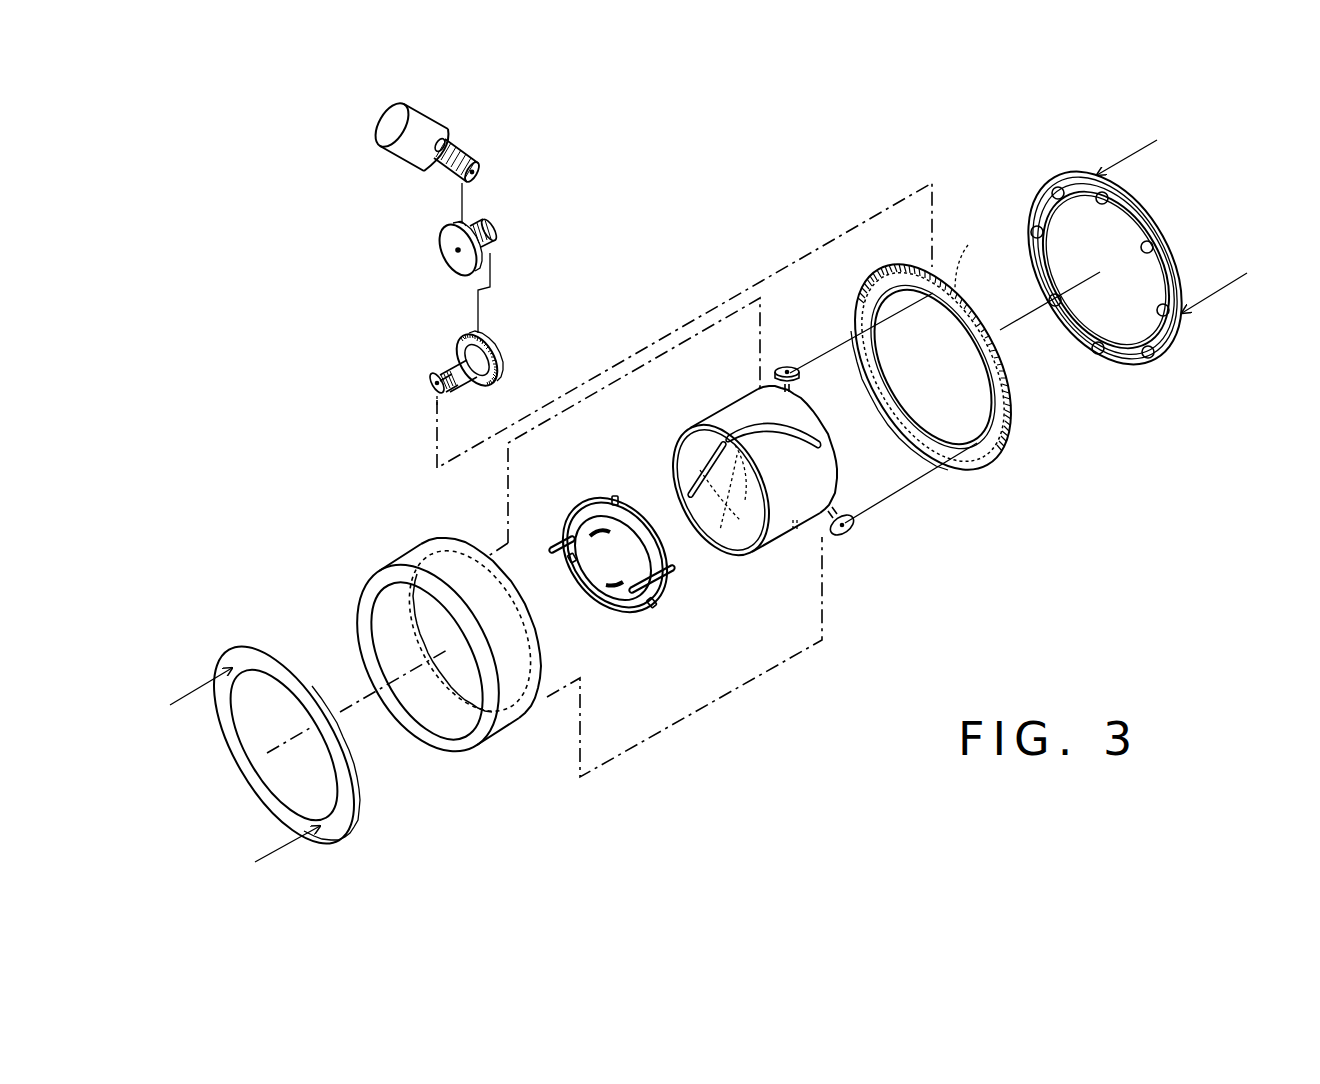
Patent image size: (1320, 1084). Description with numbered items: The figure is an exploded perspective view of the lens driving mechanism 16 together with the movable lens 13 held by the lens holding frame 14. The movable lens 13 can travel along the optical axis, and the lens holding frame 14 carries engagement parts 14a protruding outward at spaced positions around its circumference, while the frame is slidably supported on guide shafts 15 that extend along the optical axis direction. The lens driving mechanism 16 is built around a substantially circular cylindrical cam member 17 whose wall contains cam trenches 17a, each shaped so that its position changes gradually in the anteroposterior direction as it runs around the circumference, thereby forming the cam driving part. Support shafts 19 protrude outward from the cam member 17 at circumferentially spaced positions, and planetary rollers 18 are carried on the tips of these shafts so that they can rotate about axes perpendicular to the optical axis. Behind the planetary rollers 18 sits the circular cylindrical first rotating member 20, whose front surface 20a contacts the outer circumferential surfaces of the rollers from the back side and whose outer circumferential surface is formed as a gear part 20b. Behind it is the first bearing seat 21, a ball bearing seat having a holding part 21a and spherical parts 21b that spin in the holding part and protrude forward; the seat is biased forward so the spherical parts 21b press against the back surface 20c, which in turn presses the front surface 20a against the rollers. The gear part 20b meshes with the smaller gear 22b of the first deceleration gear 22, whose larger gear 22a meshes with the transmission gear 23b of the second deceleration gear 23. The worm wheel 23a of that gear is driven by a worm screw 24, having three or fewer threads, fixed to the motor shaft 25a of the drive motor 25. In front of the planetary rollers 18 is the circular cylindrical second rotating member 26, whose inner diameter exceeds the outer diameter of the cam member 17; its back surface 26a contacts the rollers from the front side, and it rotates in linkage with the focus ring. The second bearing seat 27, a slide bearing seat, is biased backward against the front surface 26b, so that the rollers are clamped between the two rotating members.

The movable lens 13 is at (582, 505).
The lens holding frame 14 is at (600, 498).
The engagement parts 14a is at (614, 495).
The guide shafts 15 is at (552, 546).
The lens driving mechanism 16 is at (258, 300).
The cam member 17 is at (732, 406).
The cam trenches 17a is at (700, 488).
The planetary rollers 18 is at (790, 366).
The support shafts 19 is at (797, 386).
The first rotating member 20 is at (1010, 448).
The front surface 20a is at (1008, 432).
The gear part 20b is at (1013, 378).
The back surface 20c is at (975, 254).
The first bearing seat 21 is at (1125, 183).
The holding part 21a is at (1150, 210).
The spherical parts 21b is at (1033, 226).
The first deceleration gear 22 is at (496, 342).
The larger gear 22a is at (502, 362).
The smaller gear 22b is at (430, 373).
The second deceleration gear 23 is at (442, 251).
The worm wheel 23a is at (452, 222).
The transmission gear 23b is at (497, 230).
The worm screw 24 is at (486, 156).
The drive motor 25 is at (383, 149).
The motor shaft 25a is at (446, 140).
The second rotating member 26 is at (415, 548).
The back surface 26a is at (488, 540).
The front surface 26b is at (372, 580).
The second bearing seat 27 is at (256, 650).